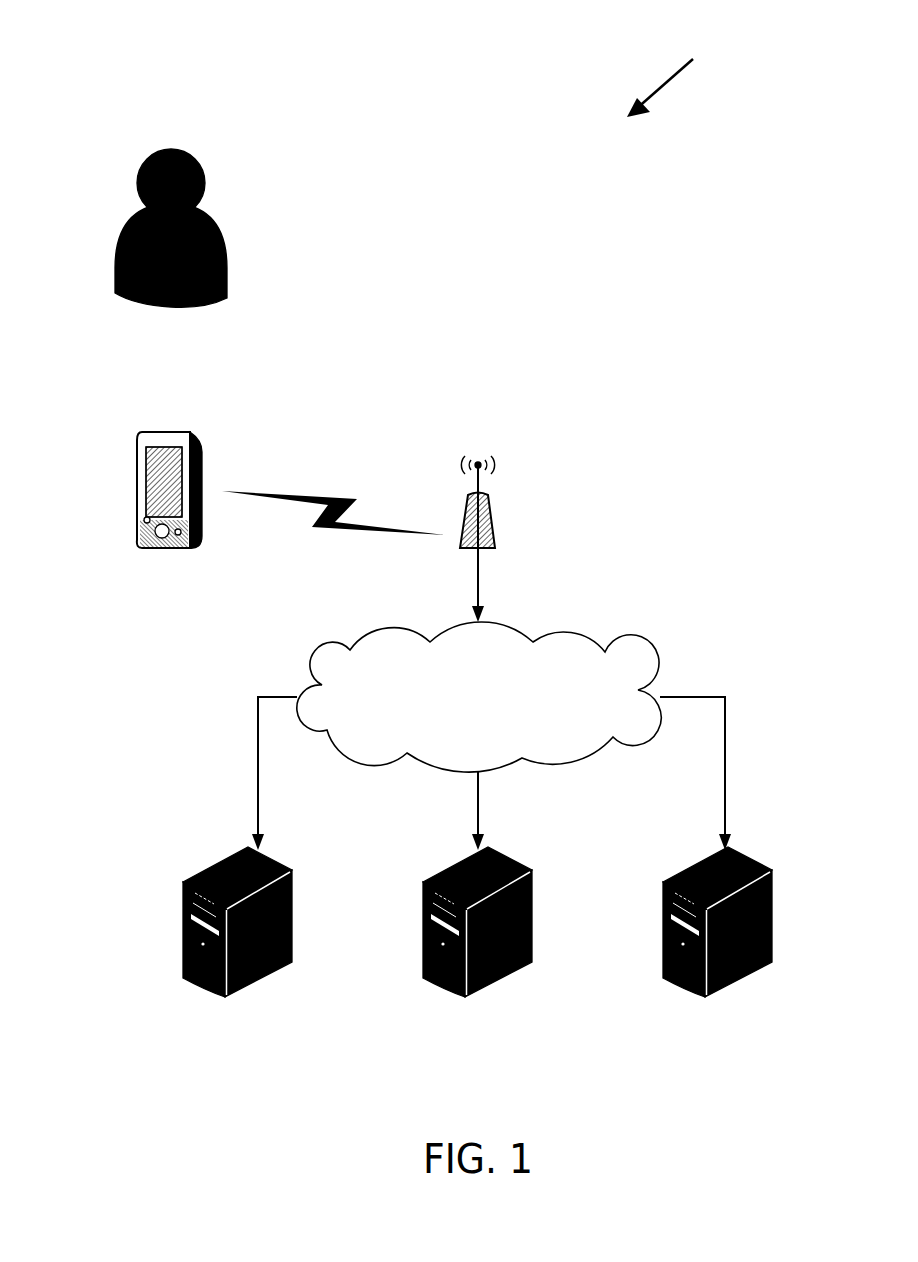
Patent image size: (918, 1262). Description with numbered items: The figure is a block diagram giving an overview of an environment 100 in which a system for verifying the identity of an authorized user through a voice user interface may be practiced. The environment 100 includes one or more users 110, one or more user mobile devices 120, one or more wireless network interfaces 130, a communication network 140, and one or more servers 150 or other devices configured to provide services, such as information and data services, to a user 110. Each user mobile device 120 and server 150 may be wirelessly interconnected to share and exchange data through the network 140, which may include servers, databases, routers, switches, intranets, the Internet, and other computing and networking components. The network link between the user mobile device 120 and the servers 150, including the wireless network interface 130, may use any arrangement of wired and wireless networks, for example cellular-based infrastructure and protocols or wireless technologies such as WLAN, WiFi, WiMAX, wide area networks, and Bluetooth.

The environment 100 is at (693, 72).
The user 110 is at (140, 170).
The user mobile device 120 is at (140, 475).
The wireless network interface 130 is at (460, 465).
The communication network 140 is at (592, 637).
The server 150 is at (225, 997).